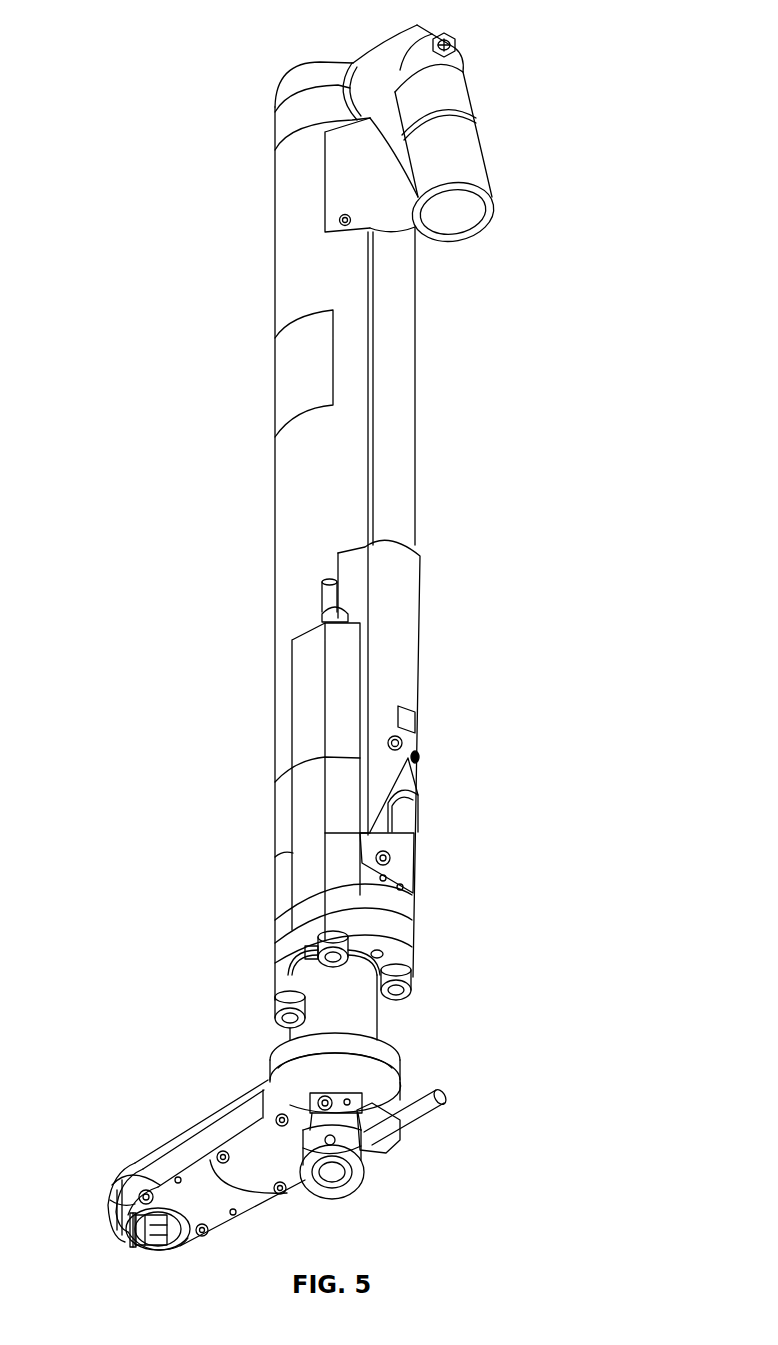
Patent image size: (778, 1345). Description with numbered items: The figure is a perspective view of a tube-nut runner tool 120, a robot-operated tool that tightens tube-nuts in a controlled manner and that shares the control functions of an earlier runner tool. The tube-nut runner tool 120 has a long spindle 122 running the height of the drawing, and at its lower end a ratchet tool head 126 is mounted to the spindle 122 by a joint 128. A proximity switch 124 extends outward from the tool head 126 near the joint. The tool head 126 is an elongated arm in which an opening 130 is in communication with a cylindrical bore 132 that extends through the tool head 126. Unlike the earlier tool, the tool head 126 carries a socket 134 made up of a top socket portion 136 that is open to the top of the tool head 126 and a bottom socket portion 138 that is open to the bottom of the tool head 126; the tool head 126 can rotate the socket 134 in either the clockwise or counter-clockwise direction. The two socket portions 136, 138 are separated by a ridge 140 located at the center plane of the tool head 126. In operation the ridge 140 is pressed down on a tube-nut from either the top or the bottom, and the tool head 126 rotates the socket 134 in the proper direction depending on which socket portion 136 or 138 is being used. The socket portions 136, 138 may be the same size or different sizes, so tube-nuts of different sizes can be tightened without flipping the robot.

The tube-nut runner tool 120 is at (102, 36).
The spindle 122 is at (283, 565).
The proximity switch 124 is at (418, 1117).
The ratchet tool head 126 is at (203, 1109).
The joint 128 is at (370, 1030).
The opening 130 is at (123, 1245).
The cylindrical bore 132 is at (143, 1246).
The socket 134 is at (124, 1244).
The top socket portion 136 is at (132, 1202).
The bottom socket portion 138 is at (178, 1232).
The ridge 140 is at (163, 1210).